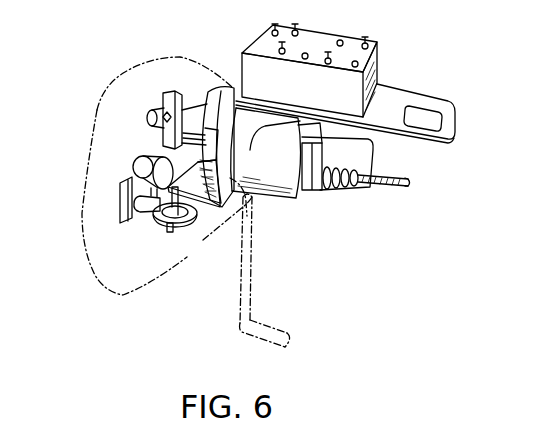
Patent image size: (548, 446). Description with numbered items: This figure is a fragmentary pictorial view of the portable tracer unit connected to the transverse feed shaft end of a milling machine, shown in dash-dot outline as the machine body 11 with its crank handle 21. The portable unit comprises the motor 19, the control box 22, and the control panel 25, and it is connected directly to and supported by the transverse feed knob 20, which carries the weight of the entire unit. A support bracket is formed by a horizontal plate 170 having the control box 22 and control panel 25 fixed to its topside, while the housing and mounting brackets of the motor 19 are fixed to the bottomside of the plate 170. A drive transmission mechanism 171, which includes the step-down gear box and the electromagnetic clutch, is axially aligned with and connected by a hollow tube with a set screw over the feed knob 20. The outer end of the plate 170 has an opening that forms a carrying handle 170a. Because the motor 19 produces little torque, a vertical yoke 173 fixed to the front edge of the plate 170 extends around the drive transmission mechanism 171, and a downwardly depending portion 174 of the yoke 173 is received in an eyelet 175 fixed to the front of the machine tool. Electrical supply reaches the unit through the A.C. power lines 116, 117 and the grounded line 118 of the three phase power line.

The housing 11 is at (100, 121).
The motor 19 is at (280, 175).
The transverse feed knob 20 is at (158, 111).
The crank handle 21 is at (128, 172).
The control box 22 is at (373, 72).
The control panel 25 is at (330, 33).
The power line 116 is at (410, 182).
The power line 117 is at (408, 187).
The grounded line 118 is at (407, 179).
The horizontal plate 170 is at (397, 97).
The carrying handle 170a is at (450, 124).
The drive transmission mechanism 171 is at (213, 100).
The vertical yoke 173 is at (213, 157).
The downwardly depending portion 174 is at (174, 233).
The eyelet 175 is at (199, 217).